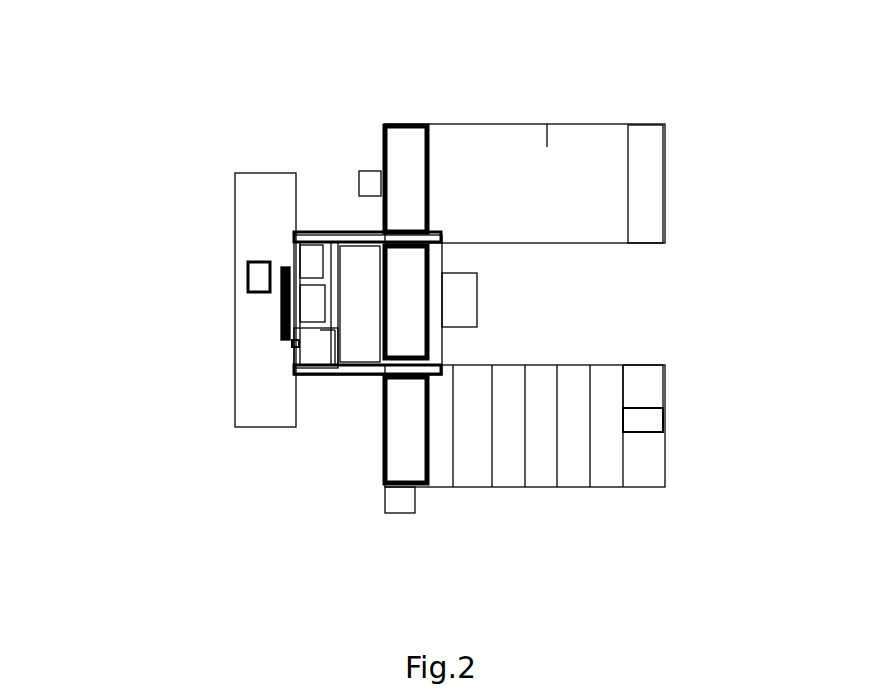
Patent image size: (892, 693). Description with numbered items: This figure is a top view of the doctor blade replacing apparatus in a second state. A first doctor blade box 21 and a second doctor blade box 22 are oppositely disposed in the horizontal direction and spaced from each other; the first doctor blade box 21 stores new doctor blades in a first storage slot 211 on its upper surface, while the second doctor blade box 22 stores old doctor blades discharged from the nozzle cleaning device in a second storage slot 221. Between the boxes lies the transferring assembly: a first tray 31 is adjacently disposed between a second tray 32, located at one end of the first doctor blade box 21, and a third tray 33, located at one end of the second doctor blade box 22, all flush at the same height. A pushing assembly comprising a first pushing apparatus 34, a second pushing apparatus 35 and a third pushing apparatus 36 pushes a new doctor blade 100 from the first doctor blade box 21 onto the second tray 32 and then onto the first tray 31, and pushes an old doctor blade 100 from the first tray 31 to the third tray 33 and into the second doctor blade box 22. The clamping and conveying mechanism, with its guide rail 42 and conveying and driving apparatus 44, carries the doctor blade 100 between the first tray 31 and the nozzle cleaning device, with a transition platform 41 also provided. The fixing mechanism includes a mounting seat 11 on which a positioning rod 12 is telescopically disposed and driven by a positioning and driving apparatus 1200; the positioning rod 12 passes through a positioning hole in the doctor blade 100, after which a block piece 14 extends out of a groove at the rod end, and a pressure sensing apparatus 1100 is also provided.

The mounting seat 11 is at (260, 197).
The positioning rod 12 is at (300, 268).
The block piece 14 is at (328, 345).
The first doctor blade box 21 is at (665, 457).
The first storage slot 211 is at (640, 380).
The second doctor blade box 22 is at (596, 124).
The second storage slot 221 is at (547, 147).
The first tray 31 is at (400, 268).
The second tray 32 is at (425, 470).
The third tray 33 is at (432, 128).
The first pushing apparatus 34 is at (647, 425).
The second pushing apparatus 35 is at (402, 515).
The third pushing apparatus 36 is at (375, 171).
The transition platform 41 is at (363, 272).
The guide rail 42 is at (318, 225).
The conveying and driving apparatus 44 is at (463, 300).
The doctor blade 100 is at (300, 305).
The pressure sensing apparatus 1100 is at (292, 345).
The positioning and driving apparatus 1200 is at (247, 270).